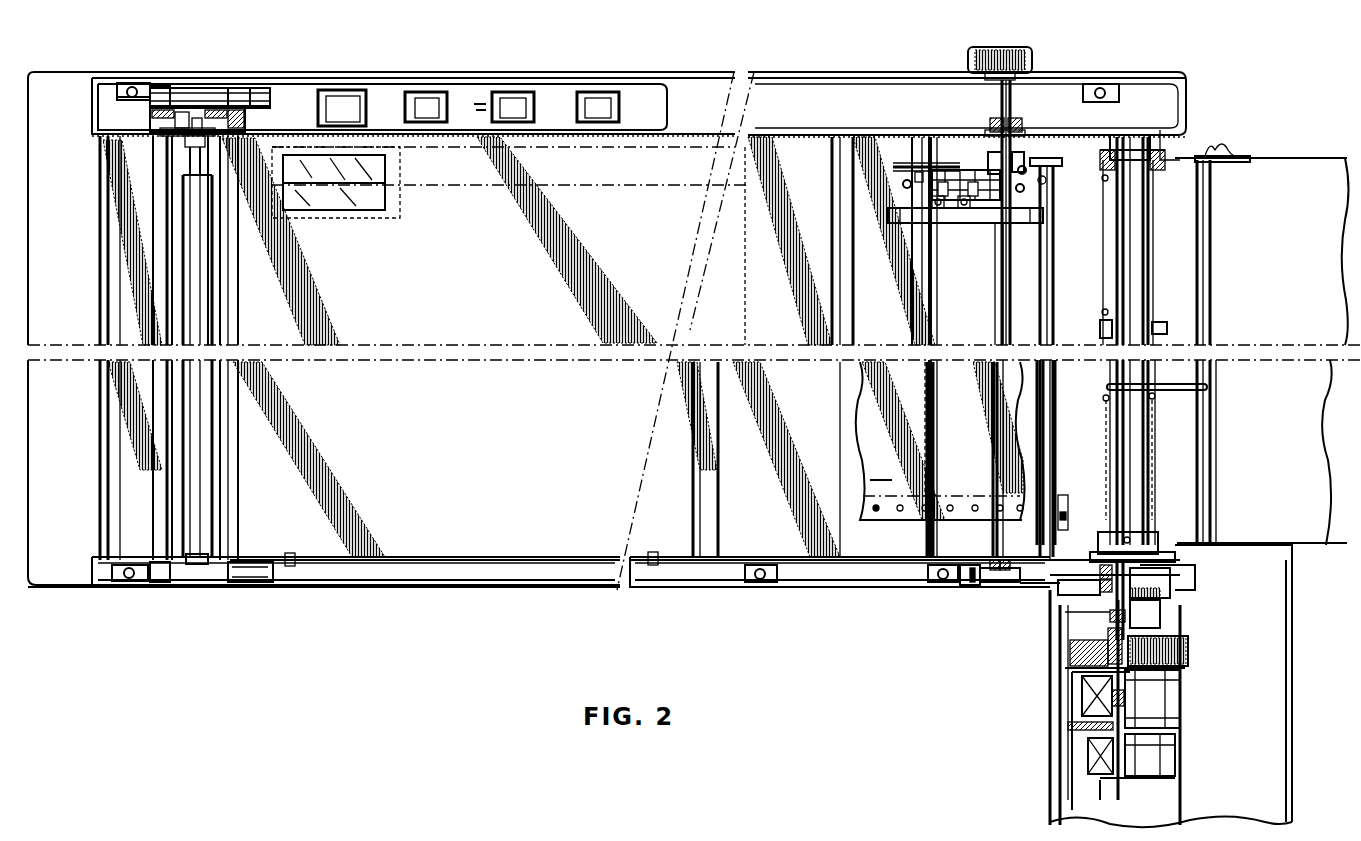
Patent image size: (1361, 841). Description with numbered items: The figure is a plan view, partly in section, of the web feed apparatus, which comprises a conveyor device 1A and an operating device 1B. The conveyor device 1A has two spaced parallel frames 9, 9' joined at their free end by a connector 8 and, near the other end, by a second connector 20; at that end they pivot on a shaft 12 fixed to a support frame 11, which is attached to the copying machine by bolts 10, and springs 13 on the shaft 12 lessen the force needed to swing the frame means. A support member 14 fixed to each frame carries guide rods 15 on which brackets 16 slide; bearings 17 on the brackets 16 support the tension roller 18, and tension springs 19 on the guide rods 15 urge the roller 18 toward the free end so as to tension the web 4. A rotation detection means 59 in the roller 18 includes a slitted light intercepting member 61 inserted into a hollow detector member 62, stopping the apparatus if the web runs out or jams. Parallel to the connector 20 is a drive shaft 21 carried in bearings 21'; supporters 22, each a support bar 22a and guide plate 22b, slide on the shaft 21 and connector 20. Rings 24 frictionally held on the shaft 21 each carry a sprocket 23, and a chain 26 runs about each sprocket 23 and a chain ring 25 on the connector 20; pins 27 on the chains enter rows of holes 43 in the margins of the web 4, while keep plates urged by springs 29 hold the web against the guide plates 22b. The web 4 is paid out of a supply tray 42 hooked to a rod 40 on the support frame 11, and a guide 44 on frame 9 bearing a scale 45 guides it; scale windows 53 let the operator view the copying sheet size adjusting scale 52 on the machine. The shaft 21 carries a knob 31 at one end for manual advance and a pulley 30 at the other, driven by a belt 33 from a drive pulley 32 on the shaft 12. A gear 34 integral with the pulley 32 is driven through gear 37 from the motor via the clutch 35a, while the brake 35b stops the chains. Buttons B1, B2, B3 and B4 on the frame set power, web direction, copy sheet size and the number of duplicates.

The connector 8 is at (108, 312).
The frame 9 is at (413, 357).
The frame 9' is at (967, 84).
The conveyor device 1A is at (520, 585).
The operating device 1B is at (1296, 704).
The support member 14 is at (152, 90).
The guide rods 15 is at (258, 92).
The brackets 16 is at (170, 90).
The bearings 17 is at (170, 140).
The tension roller 18 is at (215, 292).
The tension springs 19 is at (236, 92).
The rotation detection means 59 is at (198, 88).
The light intercepting member 61 is at (150, 120).
The detector member 62 is at (244, 118).
The power source button B1 is at (350, 98).
The button B2 is at (432, 100).
The copy sheet size setting button B3 is at (515, 100).
The duplicate number setting button B4 is at (598, 100).
The copying sheet size adjusting scale 52 is at (388, 166).
The scale windows 53 is at (388, 196).
The scale 45 is at (845, 148).
The guide 44 is at (810, 558).
The knob 31 is at (1014, 46).
The drive shaft 21 is at (1023, 390).
The bearings 21' is at (1007, 331).
The supporters 22 is at (1034, 220).
The support bar 22a is at (904, 164).
The guide plate 22b is at (985, 230).
The sprocket 23 is at (1050, 170).
The rings 24 is at (990, 154).
The chain rings 25 is at (916, 190).
The chain 26 is at (935, 170).
The pins 27 is at (952, 216).
The springs 29 is at (906, 188).
The connector 20 is at (938, 302).
The shaft 12 is at (1145, 312).
The springs 13 is at (1156, 300).
The support frame 11 is at (1238, 158).
The rod 40 is at (1218, 494).
The web supply tray 42 is at (1288, 436).
The bolts 10 is at (1068, 520).
The web 4 is at (940, 459).
The holes 43 is at (876, 510).
The pulley 30 is at (986, 582).
The drive pulley 32 is at (1170, 576).
The belt 33 is at (1052, 580).
The gear 34 is at (1172, 606).
The gear 37 is at (1194, 652).
The clutch 35a is at (1180, 686).
The brake 35b is at (1176, 742).